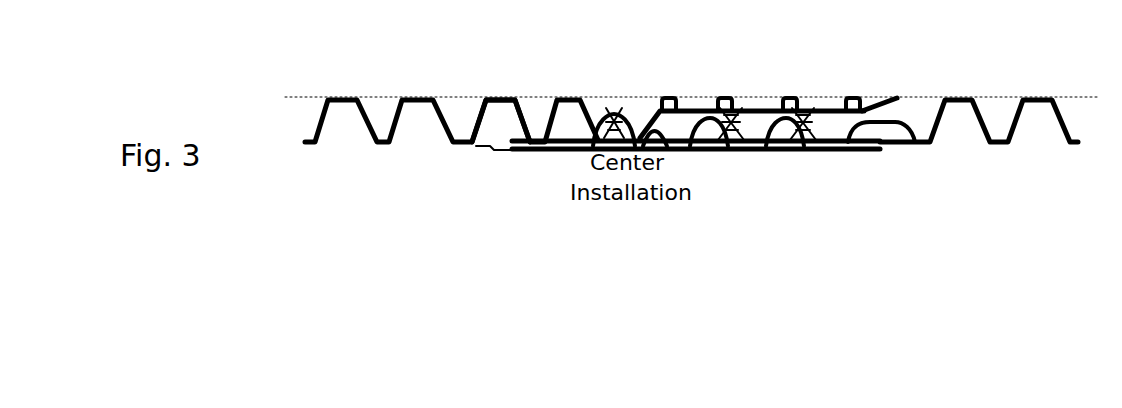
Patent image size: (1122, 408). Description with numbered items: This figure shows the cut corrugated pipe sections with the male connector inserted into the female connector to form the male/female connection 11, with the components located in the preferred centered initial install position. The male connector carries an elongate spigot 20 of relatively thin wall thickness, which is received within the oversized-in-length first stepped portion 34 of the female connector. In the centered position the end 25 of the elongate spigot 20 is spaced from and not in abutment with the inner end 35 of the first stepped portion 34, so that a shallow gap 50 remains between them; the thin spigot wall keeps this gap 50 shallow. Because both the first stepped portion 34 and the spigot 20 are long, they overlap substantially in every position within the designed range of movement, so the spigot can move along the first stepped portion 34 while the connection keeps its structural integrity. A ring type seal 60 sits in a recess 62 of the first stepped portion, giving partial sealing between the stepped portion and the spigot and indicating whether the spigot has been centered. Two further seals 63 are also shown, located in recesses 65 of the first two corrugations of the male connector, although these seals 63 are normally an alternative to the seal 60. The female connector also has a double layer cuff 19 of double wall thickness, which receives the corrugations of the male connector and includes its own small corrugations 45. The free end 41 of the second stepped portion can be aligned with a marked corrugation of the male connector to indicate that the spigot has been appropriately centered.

The male/female connection 11 is at (808, 162).
The cuff 19 is at (835, 94).
The elongate spigot 20 is at (557, 153).
The end of the elongate spigot 25 is at (513, 152).
The first stepped portion 34 is at (502, 128).
The inner end of the first stepped portion 35 is at (471, 134).
The free end of the second stepped portion 41 is at (905, 97).
The small corrugations 45 is at (667, 99).
The gap 50 is at (492, 154).
The seal 60 is at (610, 118).
The recess 62 is at (616, 110).
The further seals 63 is at (803, 150).
The recesses 65 is at (743, 116).